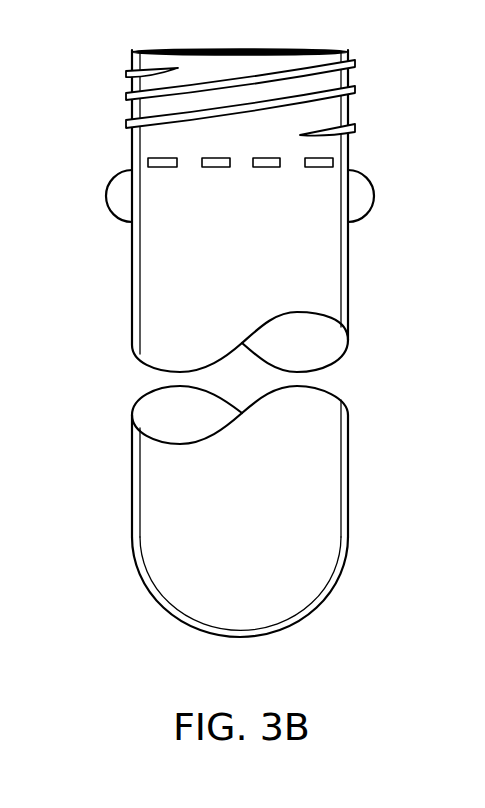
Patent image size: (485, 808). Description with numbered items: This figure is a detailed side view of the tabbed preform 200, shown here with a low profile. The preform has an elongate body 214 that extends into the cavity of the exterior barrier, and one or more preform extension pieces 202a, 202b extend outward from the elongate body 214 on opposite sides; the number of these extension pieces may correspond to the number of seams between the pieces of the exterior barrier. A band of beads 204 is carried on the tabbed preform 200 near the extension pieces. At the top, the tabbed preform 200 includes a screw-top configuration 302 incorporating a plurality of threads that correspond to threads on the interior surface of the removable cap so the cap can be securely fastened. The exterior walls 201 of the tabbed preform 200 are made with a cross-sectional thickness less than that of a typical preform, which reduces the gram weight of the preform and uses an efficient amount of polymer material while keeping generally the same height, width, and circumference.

The tabbed preform 200 is at (225, 350).
The exterior walls 201 is at (338, 460).
The preform extension piece 202a is at (387, 158).
The preform extension piece 202b is at (117, 183).
The beads 204 is at (267, 167).
The elongate body 214 is at (333, 265).
The screw-top configuration 302 is at (195, 83).